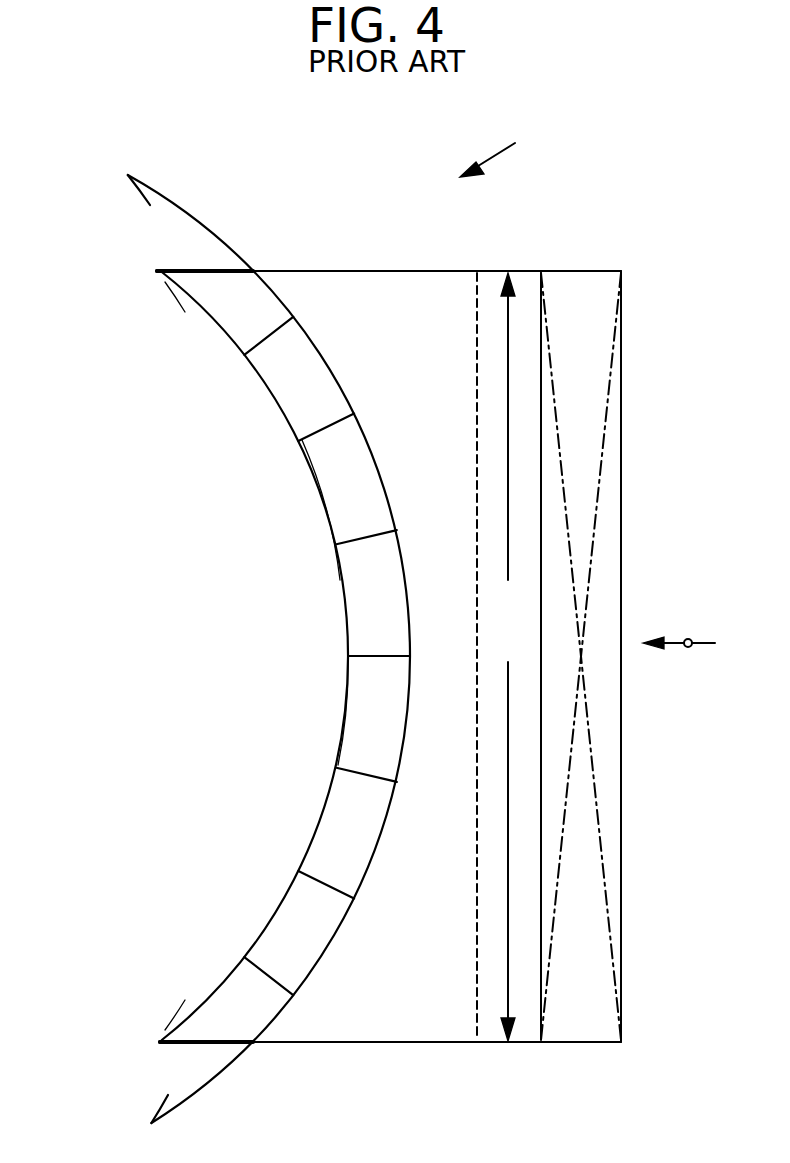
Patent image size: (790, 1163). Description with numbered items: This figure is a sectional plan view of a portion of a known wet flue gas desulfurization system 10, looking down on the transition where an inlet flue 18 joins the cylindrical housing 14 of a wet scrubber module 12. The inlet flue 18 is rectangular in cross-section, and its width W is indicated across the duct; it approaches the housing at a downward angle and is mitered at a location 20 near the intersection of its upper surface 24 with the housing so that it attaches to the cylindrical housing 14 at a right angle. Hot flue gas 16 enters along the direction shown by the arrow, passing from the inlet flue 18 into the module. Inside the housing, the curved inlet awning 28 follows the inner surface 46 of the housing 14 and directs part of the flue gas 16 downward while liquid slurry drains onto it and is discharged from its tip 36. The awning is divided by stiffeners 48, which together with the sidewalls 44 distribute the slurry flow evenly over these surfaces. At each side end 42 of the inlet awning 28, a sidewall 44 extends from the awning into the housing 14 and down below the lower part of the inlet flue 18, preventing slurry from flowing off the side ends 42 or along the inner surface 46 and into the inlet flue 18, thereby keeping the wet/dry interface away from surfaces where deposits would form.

The wet flue gas desulfurization system 10 is at (508, 149).
The wet scrubber module 12 is at (97, 721).
The cylindrical housing 14 is at (190, 1093).
The flue gas 16 is at (691, 636).
The inlet flue 18 is at (523, 1030).
The location near intersection of upper surface 20 is at (380, 295).
The upper surface 24 is at (491, 656).
The inlet awning 28 is at (278, 385).
The tip 36 is at (343, 595).
The side ends 42 is at (193, 277).
The sidewalls 44 is at (167, 270).
The inner surface 46 is at (150, 187).
The stiffeners 48 is at (372, 657).